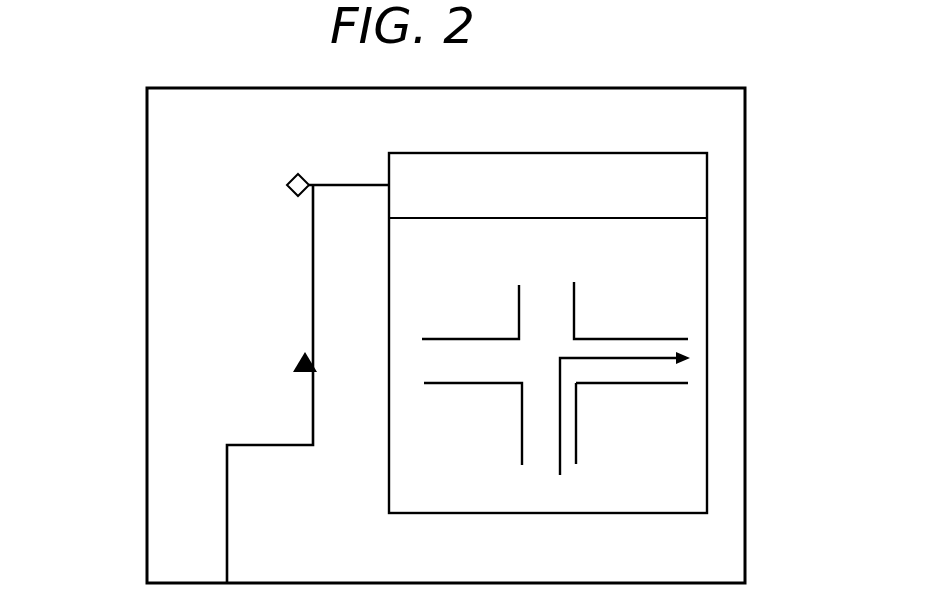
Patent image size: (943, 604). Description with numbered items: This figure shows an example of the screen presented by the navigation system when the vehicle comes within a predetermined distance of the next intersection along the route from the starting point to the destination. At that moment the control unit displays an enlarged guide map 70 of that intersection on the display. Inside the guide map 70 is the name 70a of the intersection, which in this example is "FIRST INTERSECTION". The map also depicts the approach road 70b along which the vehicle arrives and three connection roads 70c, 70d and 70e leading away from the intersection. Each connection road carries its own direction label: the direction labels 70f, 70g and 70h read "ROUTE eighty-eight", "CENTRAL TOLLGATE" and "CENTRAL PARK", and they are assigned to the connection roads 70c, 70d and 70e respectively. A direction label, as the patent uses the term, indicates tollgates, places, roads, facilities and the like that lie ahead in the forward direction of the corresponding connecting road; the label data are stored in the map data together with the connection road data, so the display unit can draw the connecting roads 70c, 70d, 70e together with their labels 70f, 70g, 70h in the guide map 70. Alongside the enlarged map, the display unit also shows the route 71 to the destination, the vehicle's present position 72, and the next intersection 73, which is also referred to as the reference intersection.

The guide map of the intersection 70 is at (708, 485).
The name of the intersection 70a is at (497, 164).
The approach road 70b is at (578, 428).
The connection road 70c is at (640, 383).
The connection road 70d is at (440, 384).
The connection road 70e is at (577, 293).
The direction label 70f is at (700, 318).
The direction label 70g is at (389, 318).
The direction label 70h is at (605, 248).
The route 71 is at (227, 510).
The vehicle's present position 72 is at (296, 364).
The next intersection 73 is at (287, 184).